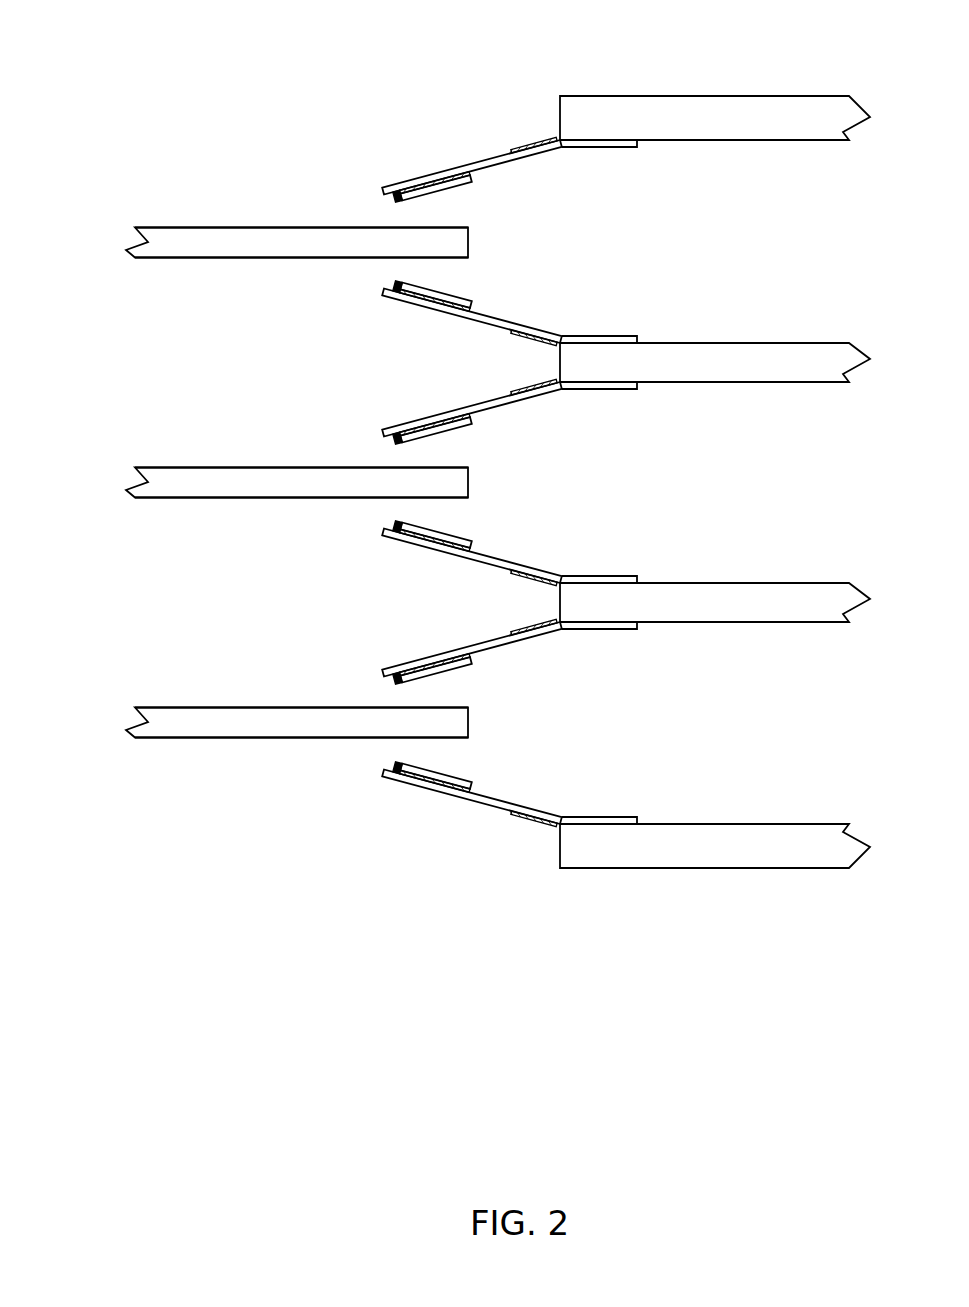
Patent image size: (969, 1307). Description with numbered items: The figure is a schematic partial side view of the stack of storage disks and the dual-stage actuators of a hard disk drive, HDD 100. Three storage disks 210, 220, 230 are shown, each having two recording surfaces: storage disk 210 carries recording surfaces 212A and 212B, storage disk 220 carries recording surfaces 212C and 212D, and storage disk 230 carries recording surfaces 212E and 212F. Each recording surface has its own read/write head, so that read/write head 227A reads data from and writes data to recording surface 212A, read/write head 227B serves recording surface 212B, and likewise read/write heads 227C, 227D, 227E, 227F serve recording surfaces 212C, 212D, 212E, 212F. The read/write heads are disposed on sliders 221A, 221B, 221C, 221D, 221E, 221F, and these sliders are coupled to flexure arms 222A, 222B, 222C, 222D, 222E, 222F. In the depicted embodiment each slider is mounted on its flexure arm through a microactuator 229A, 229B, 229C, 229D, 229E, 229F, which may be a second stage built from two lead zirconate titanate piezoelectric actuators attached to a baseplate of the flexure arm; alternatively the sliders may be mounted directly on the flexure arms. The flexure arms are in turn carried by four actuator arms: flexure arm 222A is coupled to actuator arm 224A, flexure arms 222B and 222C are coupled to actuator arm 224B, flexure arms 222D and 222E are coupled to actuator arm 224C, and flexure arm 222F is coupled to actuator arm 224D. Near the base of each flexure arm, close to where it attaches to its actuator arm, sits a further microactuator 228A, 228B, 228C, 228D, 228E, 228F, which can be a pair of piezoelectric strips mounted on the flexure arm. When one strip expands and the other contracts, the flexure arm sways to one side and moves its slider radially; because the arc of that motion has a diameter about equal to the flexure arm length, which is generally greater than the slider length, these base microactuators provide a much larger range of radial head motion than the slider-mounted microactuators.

The HDD 100 is at (200, 50).
The storage disk 210 is at (100, 243).
The storage disk 220 is at (100, 483).
The storage disk 230 is at (100, 723).
The recording surface 212A is at (250, 228).
The recording surface 212B is at (250, 258).
The recording surface 212C is at (250, 468).
The recording surface 212D is at (250, 498).
The recording surface 212E is at (250, 708).
The recording surface 212F is at (250, 738).
The slider 221A is at (455, 187).
The slider 221B is at (450, 295).
The slider 221C is at (455, 429).
The slider 221D is at (450, 535).
The slider 221E is at (455, 669).
The slider 221F is at (450, 776).
The flexure arm 222A is at (480, 162).
The flexure arm 222B is at (483, 322).
The flexure arm 222C is at (480, 404).
The flexure arm 222D is at (483, 562).
The flexure arm 222E is at (480, 644).
The flexure arm 222F is at (503, 809).
The actuator arm 224A is at (767, 134).
The actuator arm 224B is at (767, 374).
The actuator arm 224C is at (767, 615).
The actuator arm 224D is at (767, 856).
The read/write head 227A is at (395, 199).
The read/write head 227B is at (397, 283).
The read/write head 227C is at (397, 441).
The read/write head 227D is at (397, 523).
The read/write head 227E is at (397, 681).
The read/write head 227F is at (397, 764).
The microactuator 228A is at (525, 145).
The microactuator 228B is at (522, 337).
The microactuator 228C is at (522, 388).
The microactuator 228D is at (522, 577).
The microactuator 228E is at (522, 628).
The microactuator 228F is at (523, 818).
The microactuator 229A is at (470, 176).
The microactuator 229B is at (470, 307).
The microactuator 229C is at (470, 418).
The microactuator 229D is at (470, 547).
The microactuator 229E is at (470, 658).
The microactuator 229F is at (470, 788).